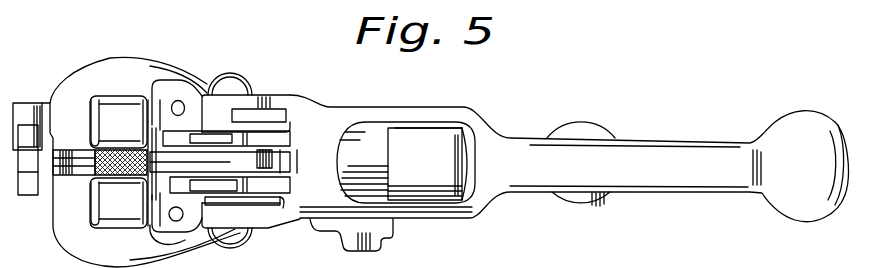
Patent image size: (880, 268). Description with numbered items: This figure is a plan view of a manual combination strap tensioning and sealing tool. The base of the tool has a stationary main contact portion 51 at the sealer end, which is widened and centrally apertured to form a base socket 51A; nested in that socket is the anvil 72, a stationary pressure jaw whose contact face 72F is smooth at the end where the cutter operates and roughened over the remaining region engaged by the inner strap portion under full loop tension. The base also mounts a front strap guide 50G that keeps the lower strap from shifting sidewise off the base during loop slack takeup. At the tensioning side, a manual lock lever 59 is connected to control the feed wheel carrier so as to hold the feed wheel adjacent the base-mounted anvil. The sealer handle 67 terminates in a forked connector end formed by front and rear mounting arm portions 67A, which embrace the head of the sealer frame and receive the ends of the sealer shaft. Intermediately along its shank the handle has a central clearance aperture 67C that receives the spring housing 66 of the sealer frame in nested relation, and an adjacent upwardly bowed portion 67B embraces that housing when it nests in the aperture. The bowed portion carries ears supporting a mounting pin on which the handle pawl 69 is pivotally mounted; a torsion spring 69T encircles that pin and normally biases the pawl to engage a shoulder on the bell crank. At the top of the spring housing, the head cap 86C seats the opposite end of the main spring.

The front strap guide 50G is at (21, 99).
The stationary main contact portion 51 is at (82, 75).
The base socket 51A is at (96, 100).
The anvil 72 is at (112, 207).
The contact face 72F is at (97, 158).
The handle pawl 69 is at (318, 130).
The torsion spring 69T is at (268, 176).
The mounting arm portions 67A is at (259, 98).
The sealer handle 67 is at (506, 195).
The upwardly bowed portion 67B is at (327, 141).
The spring housing 66 is at (365, 176).
The head cap 86C is at (445, 177).
The central clearance aperture 67C is at (423, 133).
The manual lock lever 59 is at (368, 245).